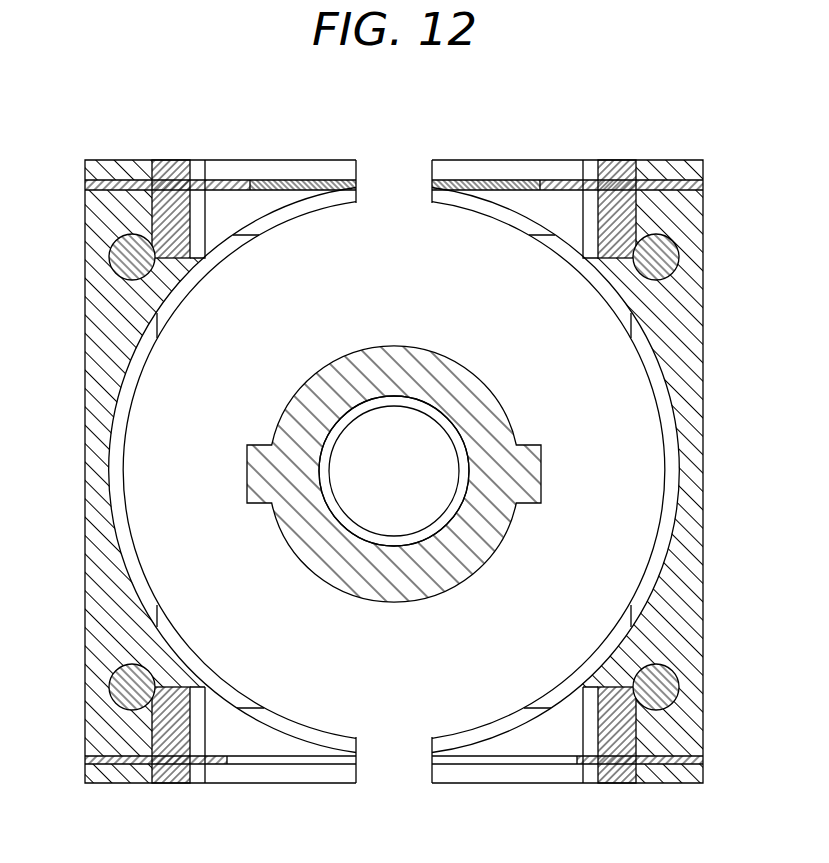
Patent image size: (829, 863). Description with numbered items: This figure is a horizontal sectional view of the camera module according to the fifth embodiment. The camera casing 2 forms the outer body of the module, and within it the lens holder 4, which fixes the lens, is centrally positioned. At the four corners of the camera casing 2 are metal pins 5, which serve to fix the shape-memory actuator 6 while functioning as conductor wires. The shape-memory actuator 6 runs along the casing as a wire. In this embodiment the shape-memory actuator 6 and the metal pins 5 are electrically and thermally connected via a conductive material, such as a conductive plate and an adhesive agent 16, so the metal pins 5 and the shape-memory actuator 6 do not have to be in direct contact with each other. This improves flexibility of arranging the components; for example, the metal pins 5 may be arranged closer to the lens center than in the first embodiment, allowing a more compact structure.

The camera casing 2 is at (688, 605).
The lens holder 4 is at (460, 374).
The metal pin 5 is at (125, 265).
The shape-memory actuator 6 is at (562, 188).
The adhesive agent 16 is at (153, 213).